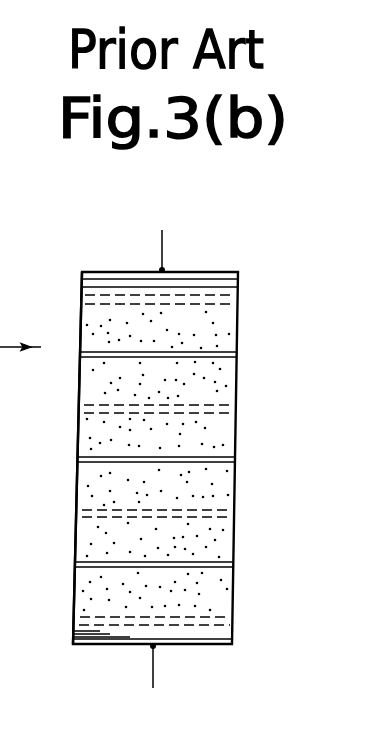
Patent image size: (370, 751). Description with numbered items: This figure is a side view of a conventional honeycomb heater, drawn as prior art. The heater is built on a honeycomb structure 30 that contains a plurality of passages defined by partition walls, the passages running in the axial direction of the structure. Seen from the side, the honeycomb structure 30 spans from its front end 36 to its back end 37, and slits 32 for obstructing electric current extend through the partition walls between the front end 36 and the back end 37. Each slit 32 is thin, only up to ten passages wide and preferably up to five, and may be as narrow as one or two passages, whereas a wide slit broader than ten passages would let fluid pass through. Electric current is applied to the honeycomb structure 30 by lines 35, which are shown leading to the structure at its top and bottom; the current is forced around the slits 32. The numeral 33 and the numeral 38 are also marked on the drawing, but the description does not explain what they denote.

The honeycomb structure 30 is at (248, 326).
The slits 32 is at (233, 565).
The piezoelectric ceramic layer 33 is at (218, 387).
The lines 35 is at (163, 251).
The front end 36 is at (75, 541).
The back end 37 is at (233, 537).
The polarization direction 38 is at (13, 347).